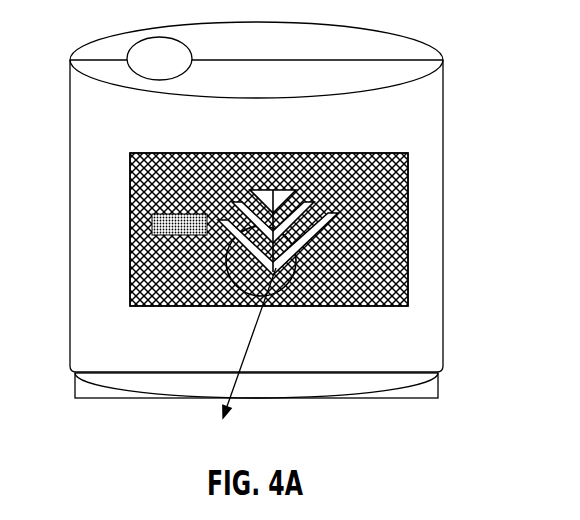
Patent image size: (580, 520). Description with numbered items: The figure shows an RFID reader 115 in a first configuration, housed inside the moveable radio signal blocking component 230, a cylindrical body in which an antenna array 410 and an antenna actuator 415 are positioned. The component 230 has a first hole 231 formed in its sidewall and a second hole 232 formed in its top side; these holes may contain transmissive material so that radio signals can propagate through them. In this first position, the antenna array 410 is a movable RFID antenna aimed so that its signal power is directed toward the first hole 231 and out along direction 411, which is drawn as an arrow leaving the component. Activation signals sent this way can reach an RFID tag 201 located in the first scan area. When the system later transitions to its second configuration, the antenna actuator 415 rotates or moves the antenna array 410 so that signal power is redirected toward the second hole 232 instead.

The component 230 is at (443, 297).
The second hole 232 is at (131, 40).
The RFID tag 201 is at (438, 385).
The RFID reader 115 is at (408, 240).
The antenna actuator 415 is at (130, 221).
The first hole 231 is at (228, 254).
The antenna array 410 is at (335, 218).
The direction 411 is at (240, 365).